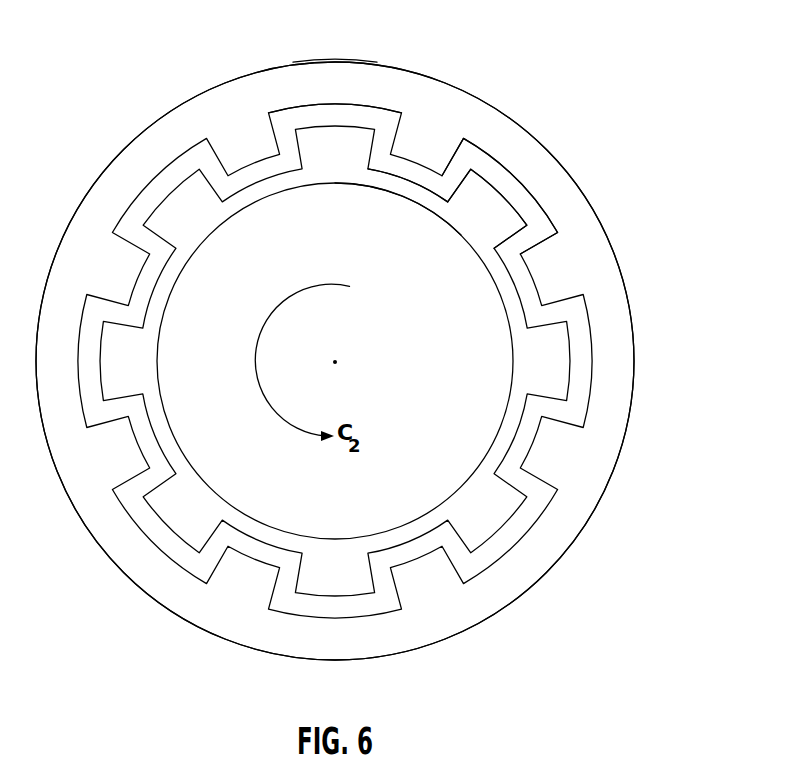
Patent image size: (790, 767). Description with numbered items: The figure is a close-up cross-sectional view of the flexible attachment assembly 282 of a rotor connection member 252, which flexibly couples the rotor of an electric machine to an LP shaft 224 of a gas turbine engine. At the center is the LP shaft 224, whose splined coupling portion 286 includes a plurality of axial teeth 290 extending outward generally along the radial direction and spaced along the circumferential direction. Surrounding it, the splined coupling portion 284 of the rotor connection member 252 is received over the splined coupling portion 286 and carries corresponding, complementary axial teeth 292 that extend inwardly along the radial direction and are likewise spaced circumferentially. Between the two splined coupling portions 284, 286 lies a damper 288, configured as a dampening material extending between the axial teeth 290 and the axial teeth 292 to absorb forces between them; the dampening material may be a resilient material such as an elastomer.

The flexible attachment assembly 282 is at (680, 230).
The rotor connection member 252 is at (502, 125).
The splined coupling portion 284 is at (342, 77).
The axial teeth 292 is at (237, 148).
The axial teeth 290 is at (177, 202).
The damper 288 is at (412, 168).
The splined coupling portion 286 is at (428, 202).
The LP shaft 224 is at (180, 277).